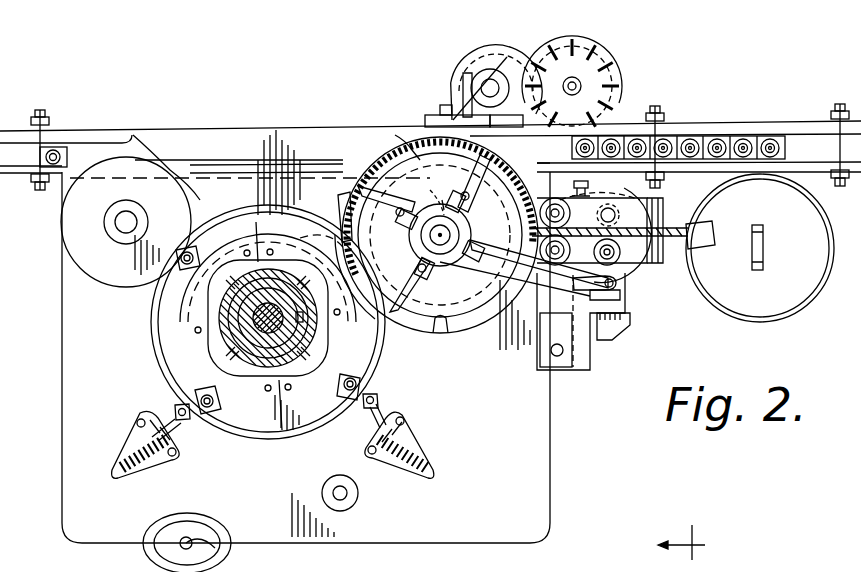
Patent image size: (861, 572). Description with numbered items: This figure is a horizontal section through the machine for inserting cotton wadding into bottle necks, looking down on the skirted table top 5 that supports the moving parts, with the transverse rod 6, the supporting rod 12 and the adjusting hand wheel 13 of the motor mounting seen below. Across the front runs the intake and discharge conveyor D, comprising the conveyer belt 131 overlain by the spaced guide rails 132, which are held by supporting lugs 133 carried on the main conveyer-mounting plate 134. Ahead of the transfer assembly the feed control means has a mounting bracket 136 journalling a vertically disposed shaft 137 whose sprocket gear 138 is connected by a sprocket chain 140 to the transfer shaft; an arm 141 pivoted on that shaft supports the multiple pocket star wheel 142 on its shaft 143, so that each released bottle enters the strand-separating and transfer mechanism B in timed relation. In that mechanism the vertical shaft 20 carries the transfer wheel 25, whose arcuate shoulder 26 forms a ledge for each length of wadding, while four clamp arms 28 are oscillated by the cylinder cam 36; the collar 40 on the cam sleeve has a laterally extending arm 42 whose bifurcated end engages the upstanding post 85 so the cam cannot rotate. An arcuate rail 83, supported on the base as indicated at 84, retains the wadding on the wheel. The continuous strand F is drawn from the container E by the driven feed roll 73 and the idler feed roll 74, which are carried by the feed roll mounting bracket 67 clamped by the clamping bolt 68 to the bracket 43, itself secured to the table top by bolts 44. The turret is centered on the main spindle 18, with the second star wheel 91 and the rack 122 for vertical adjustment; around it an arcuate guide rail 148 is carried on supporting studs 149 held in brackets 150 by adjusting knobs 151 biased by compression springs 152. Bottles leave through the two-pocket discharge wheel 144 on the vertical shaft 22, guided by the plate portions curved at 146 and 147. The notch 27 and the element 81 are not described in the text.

The skirted table top 5 is at (62, 383).
The conveyer belt 131 is at (752, 126).
The guide rails 132 is at (803, 160).
The supporting lugs 133 is at (664, 120).
The main conveyer-mounting plate 134 is at (856, 94).
The curved end portion of plate 147 is at (163, 158).
The two-pocket discharge wheel 144 is at (70, 217).
The vertical shaft 22 is at (115, 226).
The arcuate guide rail 148 is at (151, 322).
The second star wheel 91 is at (268, 222).
The arcuate portion of plate 146 is at (310, 240).
The main spindle 18 is at (245, 324).
The rack 122 is at (306, 326).
The supporting studs 149 is at (183, 419).
The brackets 150 is at (140, 414).
The compression springs 152 is at (132, 440).
The adjusting knobs 151 is at (118, 462).
The adjusting hand wheel 13 is at (200, 516).
The rod 12 is at (200, 548).
The transfer wheel 25 is at (466, 326).
The arcuate shoulder 26 is at (412, 325).
The notch 27 is at (441, 338).
The fibrous material strand-separating and transfer mechanism B is at (380, 160).
The vertical shaft 20 is at (448, 252).
The clamp arms 28 is at (430, 296).
The laterally extending arm 42 is at (524, 259).
The cylinder cam 36 is at (419, 195).
The collar 40 is at (405, 167).
The rail support 84 is at (345, 196).
The sprocket gear 138 is at (488, 58).
The arm 141 is at (533, 62).
The vertically disposed shaft 137 is at (468, 86).
The mounting bracket 136 is at (480, 88).
The sprocket chain 140 is at (437, 128).
The arcuate rail 83 is at (395, 150).
The multiple pocket star wheel 142 is at (600, 66).
The shaft 143 is at (583, 86).
The housing 81 is at (675, 214).
The second feed roll 74 is at (577, 201).
The feed roll 73 is at (590, 230).
The feed roll mounting bracket 67 is at (618, 302).
The upstanding post 85 is at (622, 286).
The bracket 43 is at (600, 373).
The bolts 44 is at (560, 360).
The clamping bolt 68 is at (616, 330).
The continuous strand F is at (690, 214).
The container E is at (812, 310).
The intake and discharge conveyor D is at (5, 125).
The transverse rod 6 is at (684, 535).